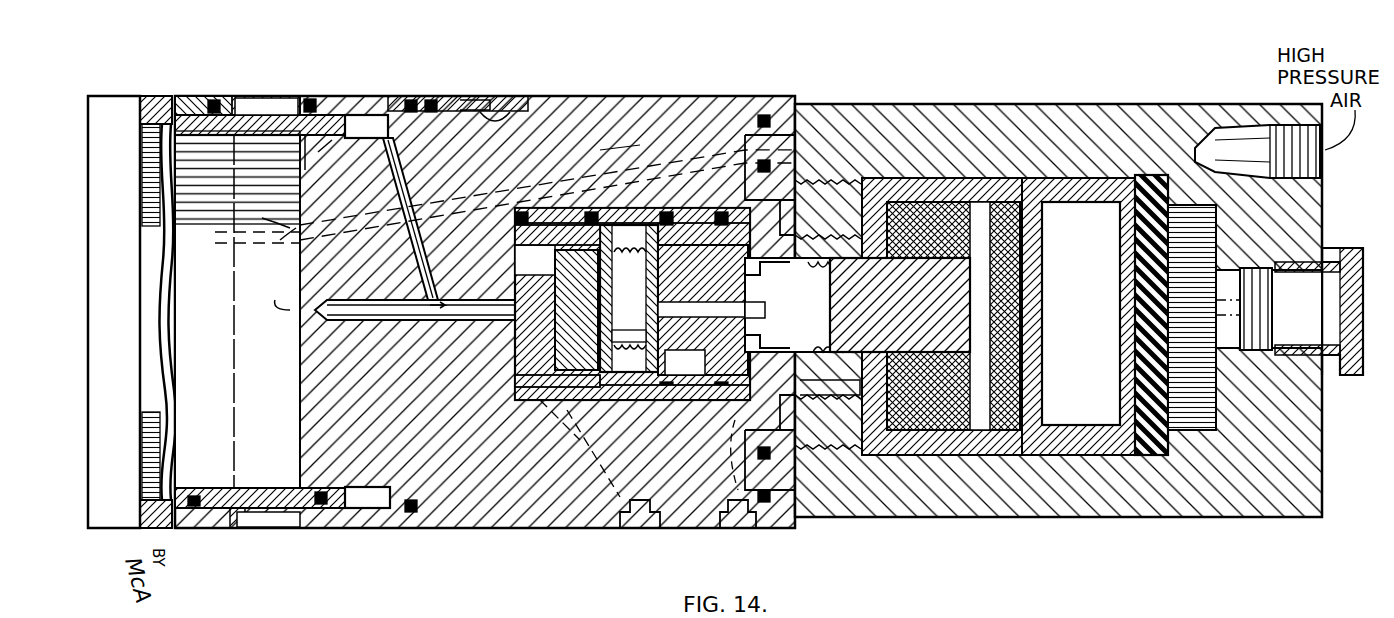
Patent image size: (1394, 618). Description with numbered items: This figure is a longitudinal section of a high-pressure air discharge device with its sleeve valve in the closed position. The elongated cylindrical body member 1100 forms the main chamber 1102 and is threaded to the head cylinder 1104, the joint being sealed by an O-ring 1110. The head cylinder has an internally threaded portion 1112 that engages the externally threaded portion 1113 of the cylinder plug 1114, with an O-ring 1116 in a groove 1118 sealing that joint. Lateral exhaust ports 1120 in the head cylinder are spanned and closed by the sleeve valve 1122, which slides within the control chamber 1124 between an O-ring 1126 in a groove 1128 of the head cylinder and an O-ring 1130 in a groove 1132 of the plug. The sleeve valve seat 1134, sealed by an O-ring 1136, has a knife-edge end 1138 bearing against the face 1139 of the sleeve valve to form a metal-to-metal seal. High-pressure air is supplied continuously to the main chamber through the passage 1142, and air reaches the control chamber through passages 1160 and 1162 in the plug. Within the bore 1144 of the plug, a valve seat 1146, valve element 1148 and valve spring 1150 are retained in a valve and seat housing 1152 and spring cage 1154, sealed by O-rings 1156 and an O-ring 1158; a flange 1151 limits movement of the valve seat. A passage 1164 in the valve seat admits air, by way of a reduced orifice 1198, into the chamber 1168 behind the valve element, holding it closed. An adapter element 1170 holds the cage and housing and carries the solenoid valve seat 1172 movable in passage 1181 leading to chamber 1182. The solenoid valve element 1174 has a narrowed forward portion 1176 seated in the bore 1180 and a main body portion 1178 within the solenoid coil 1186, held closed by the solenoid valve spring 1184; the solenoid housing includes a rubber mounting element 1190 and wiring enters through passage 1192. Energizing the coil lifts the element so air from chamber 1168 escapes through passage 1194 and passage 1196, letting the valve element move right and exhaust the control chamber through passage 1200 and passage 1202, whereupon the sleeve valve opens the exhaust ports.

The cylindrical body member 1100 is at (110, 112).
The main chamber 1102 is at (220, 319).
The head cylinder 1104 is at (198, 97).
The O-ring 1110 is at (215, 97).
The internally threaded portion 1112 is at (475, 100).
The externally threaded portion 1113 is at (487, 117).
The cylinder plug 1114 is at (560, 97).
The O-ring 1116 is at (417, 97).
The groove 1118 is at (438, 97).
The lateral exhaust ports 1120 is at (252, 100).
The sleeve valve 1122 is at (268, 503).
The control chamber 1124 is at (378, 97).
The O-ring 1126 is at (312, 100).
The groove 1128 is at (356, 118).
The O-ring 1130 is at (306, 170).
The groove 1132 is at (322, 150).
The sleeve valve seat 1134 is at (192, 500).
The O-ring 1136 is at (188, 97).
The end of sleeve valve seat 1138 is at (255, 508).
The face of sleeve valve 1139 is at (238, 505).
The passage 1142 is at (630, 148).
The bore 1144 is at (645, 408).
The valve seat 1146 is at (515, 335).
The valve element 1148 is at (631, 336).
The valve spring 1150 is at (632, 304).
The flange 1151 is at (512, 248).
The valve and seat housing 1152 is at (545, 208).
The spring cage 1154 is at (701, 416).
The O-rings 1156 is at (520, 210).
The O-ring 1158 is at (628, 208).
The passage 1160 is at (360, 300).
The passage 1162 is at (405, 170).
The passage 1164 is at (515, 292).
The chamber 1168 is at (652, 307).
The adapter element 1170 is at (688, 200).
The solenoid valve seat 1172 is at (780, 318).
The solenoid valve element 1174 is at (907, 321).
The narrowed forward portion 1176 is at (775, 272).
The main body portion 1178 is at (812, 384).
The bore 1180 is at (706, 310).
The passage 1181 is at (700, 368).
The chamber 1182 is at (770, 315).
The solenoid valve spring 1184 is at (828, 314).
The solenoid coil 1186 is at (982, 242).
The rubber mounting element 1190 is at (1165, 194).
The passage 1192 is at (1327, 331).
The passage 1194 is at (795, 352).
The passage 1196 is at (725, 460).
The reduced orifice 1198 is at (576, 310).
The passage 1200 is at (568, 410).
The passage 1202 is at (581, 453).